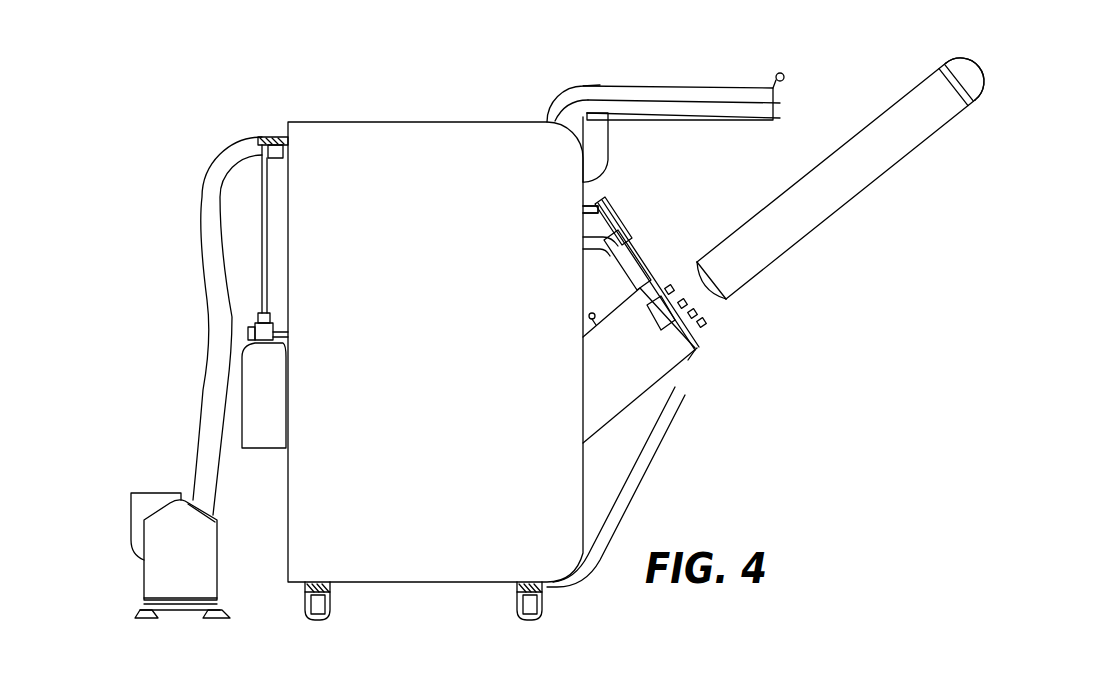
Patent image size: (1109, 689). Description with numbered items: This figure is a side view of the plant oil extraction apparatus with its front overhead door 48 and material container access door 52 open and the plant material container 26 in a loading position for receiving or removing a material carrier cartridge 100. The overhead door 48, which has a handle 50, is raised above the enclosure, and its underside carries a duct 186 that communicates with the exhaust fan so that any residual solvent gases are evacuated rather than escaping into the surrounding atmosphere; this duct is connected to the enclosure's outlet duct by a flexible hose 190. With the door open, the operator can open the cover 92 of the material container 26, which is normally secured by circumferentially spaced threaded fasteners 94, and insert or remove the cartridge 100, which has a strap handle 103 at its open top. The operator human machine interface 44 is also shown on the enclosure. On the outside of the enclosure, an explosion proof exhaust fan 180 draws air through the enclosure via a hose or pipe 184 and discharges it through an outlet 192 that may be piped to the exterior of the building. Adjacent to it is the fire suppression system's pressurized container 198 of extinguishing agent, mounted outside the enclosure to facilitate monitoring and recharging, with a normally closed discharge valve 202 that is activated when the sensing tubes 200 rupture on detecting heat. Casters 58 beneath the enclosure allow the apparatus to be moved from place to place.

The plant material container 26 is at (687, 358).
The operator human machine interface (HMI) 44 is at (585, 208).
The front overhead door 48 is at (683, 85).
The handle 50 is at (786, 75).
The material container access door 52 is at (648, 456).
The casters 58 is at (325, 618).
The cover 92 is at (640, 262).
The threaded fasteners 94 is at (710, 326).
The material carrier cartridge 100 is at (843, 206).
The strap handle 103 is at (967, 60).
The explosion proof exhaust fan 180 is at (144, 585).
The hose or pipe 184 is at (200, 181).
The duct 186 is at (692, 118).
The flexible hose 190 is at (583, 128).
The outlet of the exhaust fan 192 is at (155, 492).
The pressurized container 198 is at (243, 392).
The sensing tubes 200 is at (265, 245).
The discharge valve 202 is at (255, 325).